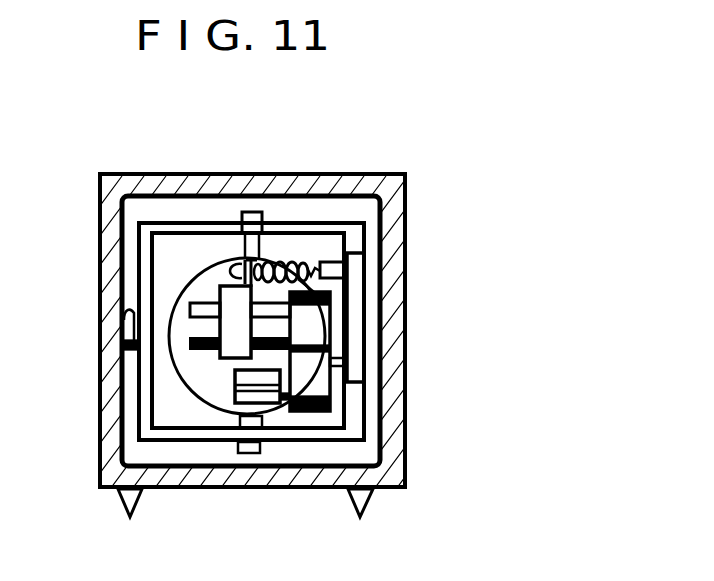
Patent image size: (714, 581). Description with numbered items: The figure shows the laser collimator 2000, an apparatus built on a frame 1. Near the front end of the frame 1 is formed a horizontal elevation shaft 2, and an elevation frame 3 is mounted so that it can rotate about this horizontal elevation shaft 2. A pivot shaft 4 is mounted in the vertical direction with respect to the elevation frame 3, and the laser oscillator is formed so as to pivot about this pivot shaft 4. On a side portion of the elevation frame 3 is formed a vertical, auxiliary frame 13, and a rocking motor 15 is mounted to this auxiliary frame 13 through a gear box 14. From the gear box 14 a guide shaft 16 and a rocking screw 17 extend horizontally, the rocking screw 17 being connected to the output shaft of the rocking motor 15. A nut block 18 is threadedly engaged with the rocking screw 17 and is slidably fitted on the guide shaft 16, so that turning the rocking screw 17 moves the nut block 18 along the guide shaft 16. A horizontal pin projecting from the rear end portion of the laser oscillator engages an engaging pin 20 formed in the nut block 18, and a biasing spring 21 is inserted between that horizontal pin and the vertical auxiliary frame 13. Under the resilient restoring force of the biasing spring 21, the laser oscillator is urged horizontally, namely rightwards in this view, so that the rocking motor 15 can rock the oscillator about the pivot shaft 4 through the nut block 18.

The frame 1 is at (405, 262).
The horizontal elevation shaft 2 is at (118, 310).
The elevation frame 3 is at (342, 214).
The pivot shaft 4 is at (236, 260).
The vertical auxiliary frame 13 is at (365, 335).
The gear box 14 is at (328, 403).
The rocking motor 15 is at (240, 380).
The guide shaft 16 is at (192, 312).
The rocking screw 17 is at (192, 338).
The nut block 18 is at (222, 290).
The engaging pin 20 is at (264, 262).
The biasing spring 21 is at (296, 264).
The laser collimator 2000 is at (456, 326).